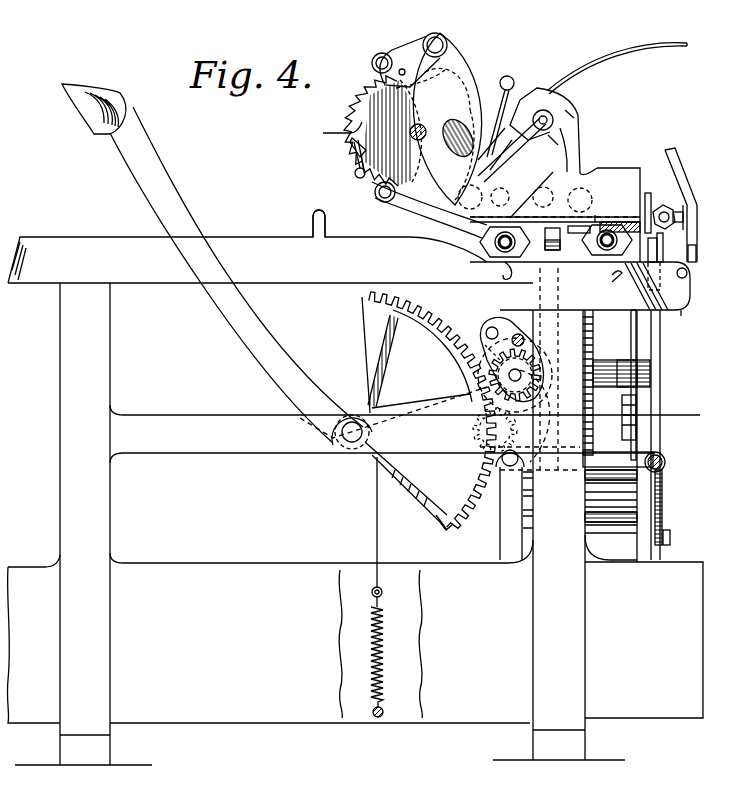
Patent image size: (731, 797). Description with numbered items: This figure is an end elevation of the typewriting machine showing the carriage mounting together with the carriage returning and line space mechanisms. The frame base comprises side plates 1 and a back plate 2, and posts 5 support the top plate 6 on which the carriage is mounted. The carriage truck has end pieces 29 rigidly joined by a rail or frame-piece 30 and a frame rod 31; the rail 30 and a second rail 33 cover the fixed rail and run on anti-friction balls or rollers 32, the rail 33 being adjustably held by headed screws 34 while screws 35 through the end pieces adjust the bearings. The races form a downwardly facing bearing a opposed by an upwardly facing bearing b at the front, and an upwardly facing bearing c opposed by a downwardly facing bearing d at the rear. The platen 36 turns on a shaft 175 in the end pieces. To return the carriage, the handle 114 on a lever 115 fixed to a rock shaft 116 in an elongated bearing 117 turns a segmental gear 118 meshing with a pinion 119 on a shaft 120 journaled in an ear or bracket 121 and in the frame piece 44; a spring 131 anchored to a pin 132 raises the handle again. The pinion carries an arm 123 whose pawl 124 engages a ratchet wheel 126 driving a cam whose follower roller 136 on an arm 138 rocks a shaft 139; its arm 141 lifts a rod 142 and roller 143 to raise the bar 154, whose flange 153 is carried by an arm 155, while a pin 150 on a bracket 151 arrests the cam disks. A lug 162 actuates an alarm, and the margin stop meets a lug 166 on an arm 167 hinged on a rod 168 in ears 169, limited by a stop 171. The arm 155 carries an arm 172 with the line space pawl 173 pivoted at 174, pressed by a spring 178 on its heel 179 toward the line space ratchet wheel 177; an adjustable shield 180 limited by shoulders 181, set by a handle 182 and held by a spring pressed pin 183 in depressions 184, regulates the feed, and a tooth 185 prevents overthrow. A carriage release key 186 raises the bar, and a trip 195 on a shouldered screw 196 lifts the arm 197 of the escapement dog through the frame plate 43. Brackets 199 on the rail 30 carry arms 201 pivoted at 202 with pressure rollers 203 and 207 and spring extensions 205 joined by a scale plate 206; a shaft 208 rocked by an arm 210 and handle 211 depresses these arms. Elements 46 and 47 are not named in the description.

The side plates 1 is at (285, 563).
The back plate 2 is at (644, 640).
The posts 5 is at (584, 322).
The top plate 6 is at (333, 225).
The end pieces 29 is at (450, 150).
The rail or frame-piece 30 is at (481, 245).
The frame rod 31 is at (445, 40).
The anti-friction balls or rollers 32 is at (612, 278).
The second rail 33 is at (600, 212).
The headed screws 34 is at (566, 238).
The screws 35 is at (648, 210).
The platen 36 is at (353, 112).
The frame plate 43 is at (645, 372).
The frame piece 44 is at (500, 529).
The rod 46 is at (631, 345).
The slide 47 is at (631, 410).
The carriage returning handle 114 is at (95, 90).
The lever 115 is at (268, 346).
The rock shaft 116 is at (355, 445).
The elongated bearing 117 is at (340, 410).
The segmental gear 118 is at (443, 527).
The pinion 119 is at (528, 352).
The shaft 120 is at (522, 375).
The ear or bracket 121 is at (460, 361).
The arm 123 is at (480, 345).
The pawl 124 is at (500, 318).
The ratchet wheel 126 is at (520, 334).
The spring 131 is at (379, 620).
The pin 132 is at (381, 712).
The anti-friction roller 136 is at (476, 397).
The arm 138 is at (481, 430).
The rock shaft 139 is at (510, 470).
The arm 141 is at (603, 452).
The rod 142 is at (661, 385).
The anti-friction roller or wheel 143 is at (641, 250).
The pin 150 is at (527, 420).
The bracket 151 is at (551, 284).
The flange 153 is at (671, 245).
The bar 154 is at (656, 212).
The arm 155 is at (618, 212).
The lug 162 is at (685, 226).
The lug 166 is at (680, 205).
The arm 167 is at (685, 218).
The rod 168 is at (584, 286).
The ears 169 is at (685, 319).
The stop or lug 171 is at (689, 256).
The arm 172 is at (567, 137).
The line space pawl 173 is at (540, 131).
The pivot 174 is at (551, 107).
The platen shaft 175 is at (418, 141).
The line space ratchet wheel 177 is at (352, 142).
The spring 178 is at (560, 130).
The heel 179 is at (574, 112).
The adjustable shield 180 is at (466, 96).
The shoulders 181 is at (402, 70).
The handle 182 is at (382, 53).
The spring pressed pin 183 is at (420, 72).
The holes or depressions 184 is at (408, 65).
The tooth 185 is at (538, 93).
The carriage release key 186 is at (326, 129).
The dog or trip 195 is at (663, 500).
The shouldered screw 196 is at (670, 540).
The arm 197 is at (663, 468).
The brackets 199 is at (505, 181).
The arm 201 is at (551, 190).
The pivot 202 is at (556, 238).
The pressure roller 203 is at (429, 210).
The spring extensions 205 is at (385, 200).
The scale plate 206 is at (356, 160).
The pressure roller 207 is at (355, 175).
The shaft 208 is at (501, 142).
The arm 210 is at (506, 112).
The handle 211 is at (509, 77).
The downwardly facing bearing a is at (504, 215).
The upwardly facing bearing b is at (511, 269).
The upwardly facing bearing c is at (619, 268).
The downwardly facing bearing d is at (552, 215).